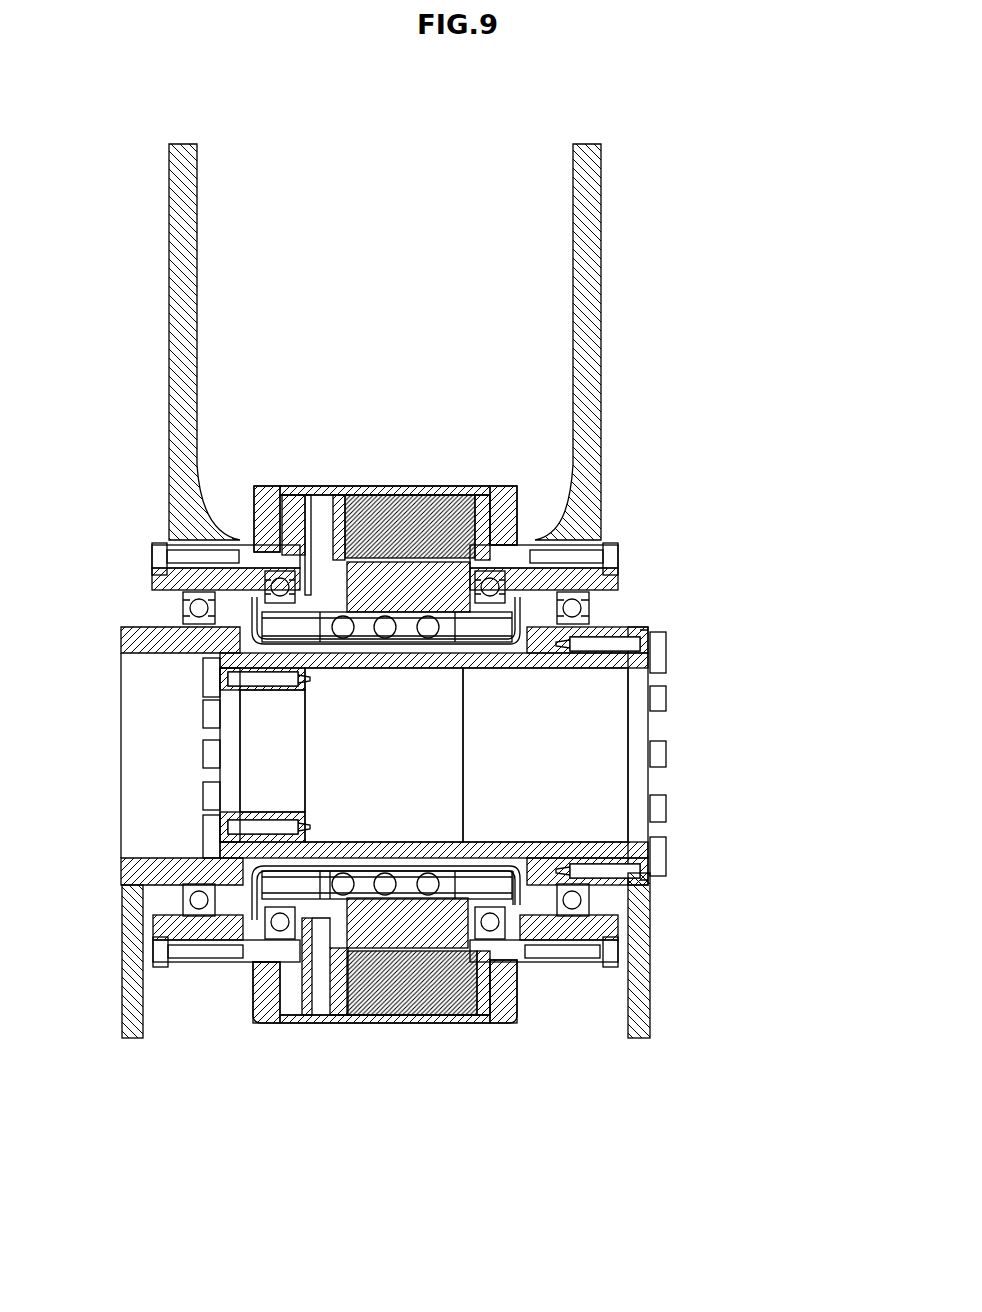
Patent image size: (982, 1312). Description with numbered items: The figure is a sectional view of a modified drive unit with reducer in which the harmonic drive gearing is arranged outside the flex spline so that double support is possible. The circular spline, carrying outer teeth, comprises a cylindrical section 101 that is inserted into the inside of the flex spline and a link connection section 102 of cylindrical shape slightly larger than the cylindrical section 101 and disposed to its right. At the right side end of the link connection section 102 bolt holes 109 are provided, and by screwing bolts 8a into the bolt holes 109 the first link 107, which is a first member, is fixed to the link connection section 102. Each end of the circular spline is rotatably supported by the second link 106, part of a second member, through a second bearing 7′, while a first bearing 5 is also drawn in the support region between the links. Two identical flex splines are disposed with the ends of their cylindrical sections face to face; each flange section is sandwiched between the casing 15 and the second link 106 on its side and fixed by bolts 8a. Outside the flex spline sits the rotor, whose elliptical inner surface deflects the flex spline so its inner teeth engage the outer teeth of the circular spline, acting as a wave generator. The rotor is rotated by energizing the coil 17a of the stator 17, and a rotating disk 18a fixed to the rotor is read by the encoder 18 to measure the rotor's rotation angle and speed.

The second link 106 is at (178, 226).
The encoder 18 is at (288, 492).
The rotating disk 18a is at (303, 492).
The stator 17 is at (378, 512).
The coil 17a is at (475, 525).
The first bearing 5 is at (262, 597).
The bolts 8a is at (610, 545).
The second bearing 7′ is at (190, 602).
The bolt holes 109 is at (644, 630).
The first link 107 is at (122, 978).
The link connection section 102 is at (595, 905).
The cylindrical section 101 is at (330, 885).
The casing 15 is at (446, 1026).